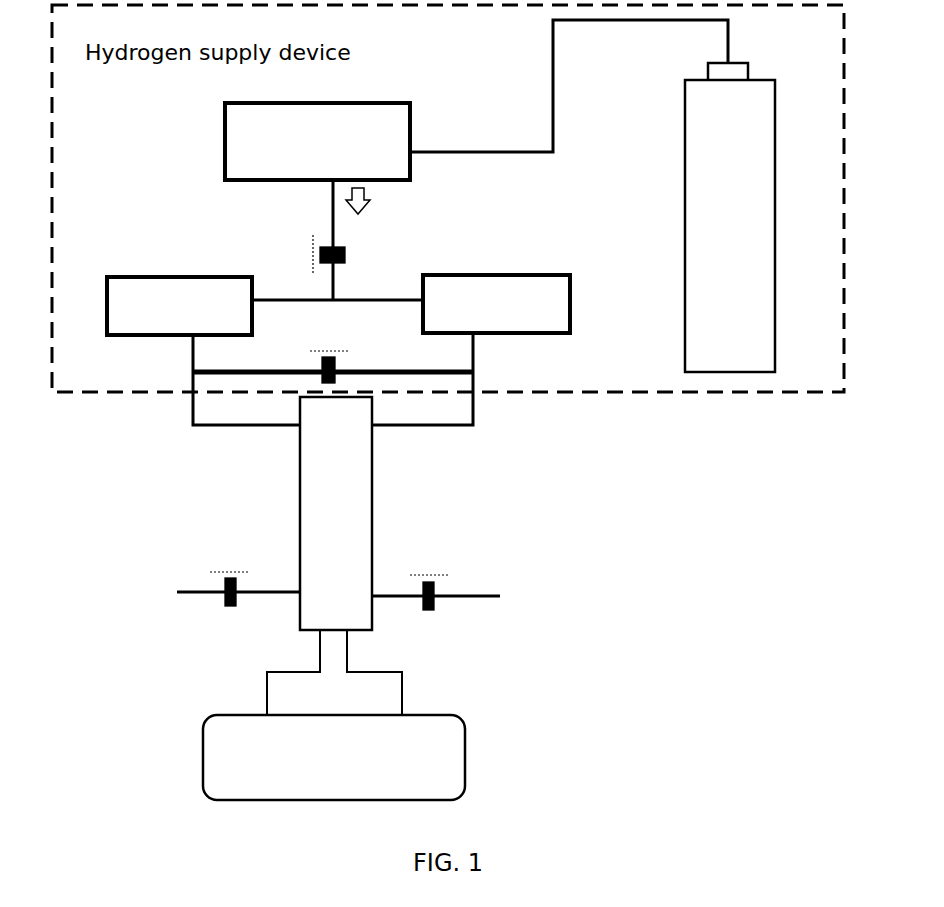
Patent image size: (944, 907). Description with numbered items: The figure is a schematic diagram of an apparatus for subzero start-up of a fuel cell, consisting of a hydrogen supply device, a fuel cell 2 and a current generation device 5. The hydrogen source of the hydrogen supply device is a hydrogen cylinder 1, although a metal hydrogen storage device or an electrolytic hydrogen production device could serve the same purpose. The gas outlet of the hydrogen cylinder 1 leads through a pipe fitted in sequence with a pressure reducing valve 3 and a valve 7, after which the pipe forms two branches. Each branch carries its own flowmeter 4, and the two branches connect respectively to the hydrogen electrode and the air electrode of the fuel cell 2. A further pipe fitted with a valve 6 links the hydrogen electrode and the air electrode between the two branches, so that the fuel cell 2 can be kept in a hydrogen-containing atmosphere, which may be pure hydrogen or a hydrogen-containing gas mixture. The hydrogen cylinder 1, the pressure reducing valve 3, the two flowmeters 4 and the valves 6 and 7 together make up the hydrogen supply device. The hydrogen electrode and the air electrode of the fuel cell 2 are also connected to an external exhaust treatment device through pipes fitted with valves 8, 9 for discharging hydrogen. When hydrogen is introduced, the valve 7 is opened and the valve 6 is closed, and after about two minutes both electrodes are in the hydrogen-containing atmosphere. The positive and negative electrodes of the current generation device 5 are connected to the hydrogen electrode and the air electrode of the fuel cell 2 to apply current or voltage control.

The hydrogen cylinder 1 is at (612, 196).
The fuel cell 2 is at (348, 513).
The pressure reducing valve 3 is at (299, 141).
The flowmeter 4 is at (335, 305).
The current generation device 5 is at (353, 715).
The valve 6 is at (333, 357).
The valve 7 is at (346, 256).
The valve 8 is at (238, 615).
The valve 9 is at (436, 617).